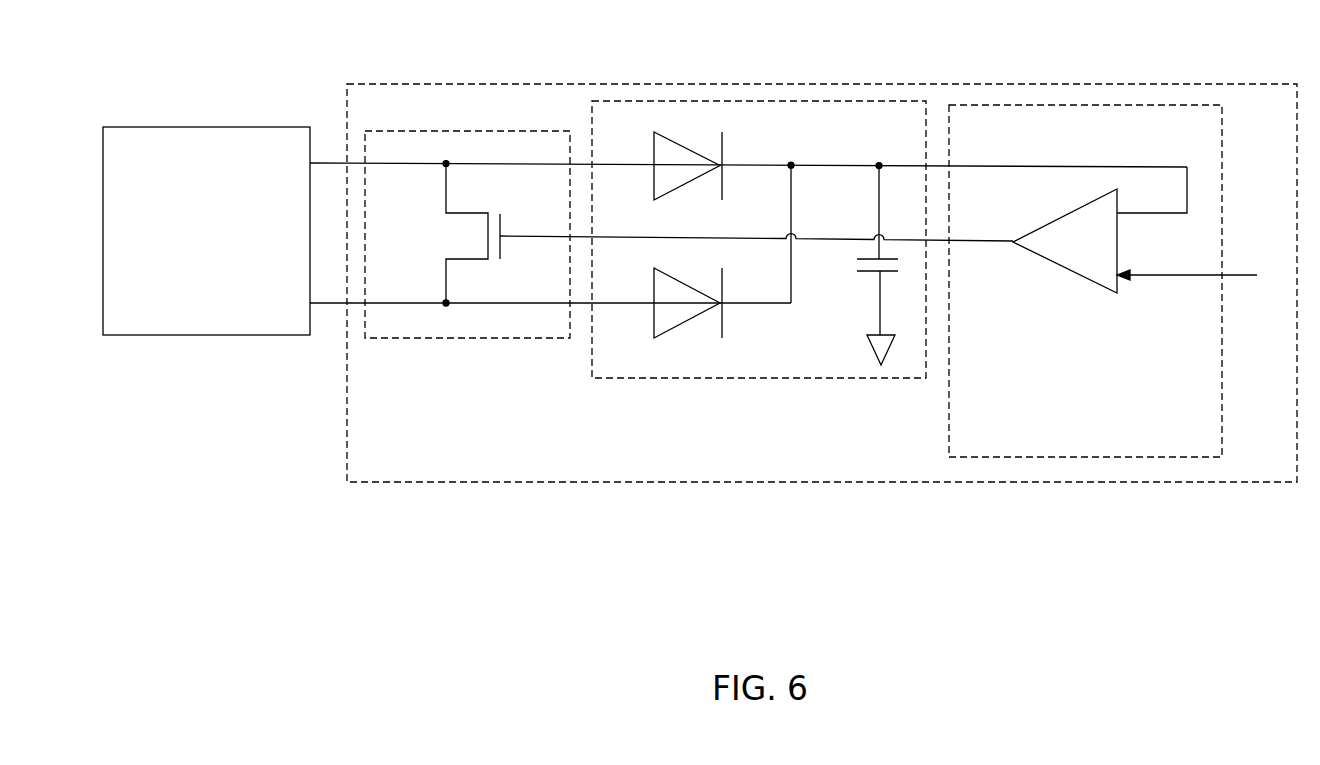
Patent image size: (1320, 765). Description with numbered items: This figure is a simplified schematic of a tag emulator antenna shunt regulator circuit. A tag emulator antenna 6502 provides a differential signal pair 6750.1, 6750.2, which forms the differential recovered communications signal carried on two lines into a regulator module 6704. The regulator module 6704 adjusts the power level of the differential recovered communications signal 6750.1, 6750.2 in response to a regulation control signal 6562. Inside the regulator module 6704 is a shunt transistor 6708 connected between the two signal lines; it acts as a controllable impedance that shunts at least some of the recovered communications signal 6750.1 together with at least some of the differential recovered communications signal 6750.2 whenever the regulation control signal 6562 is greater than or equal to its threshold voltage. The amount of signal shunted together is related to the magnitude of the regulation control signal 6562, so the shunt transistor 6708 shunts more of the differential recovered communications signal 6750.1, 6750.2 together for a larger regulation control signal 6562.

The tag emulator antenna 6502 is at (208, 127).
The regulator module 6704 is at (463, 131).
The shunt transistor 6708 is at (480, 213).
The differential recovered communications signal 6750.1 is at (322, 163).
The differential recovered communications signal 6750.2 is at (327, 303).
The regulation control signal 6562 is at (830, 238).